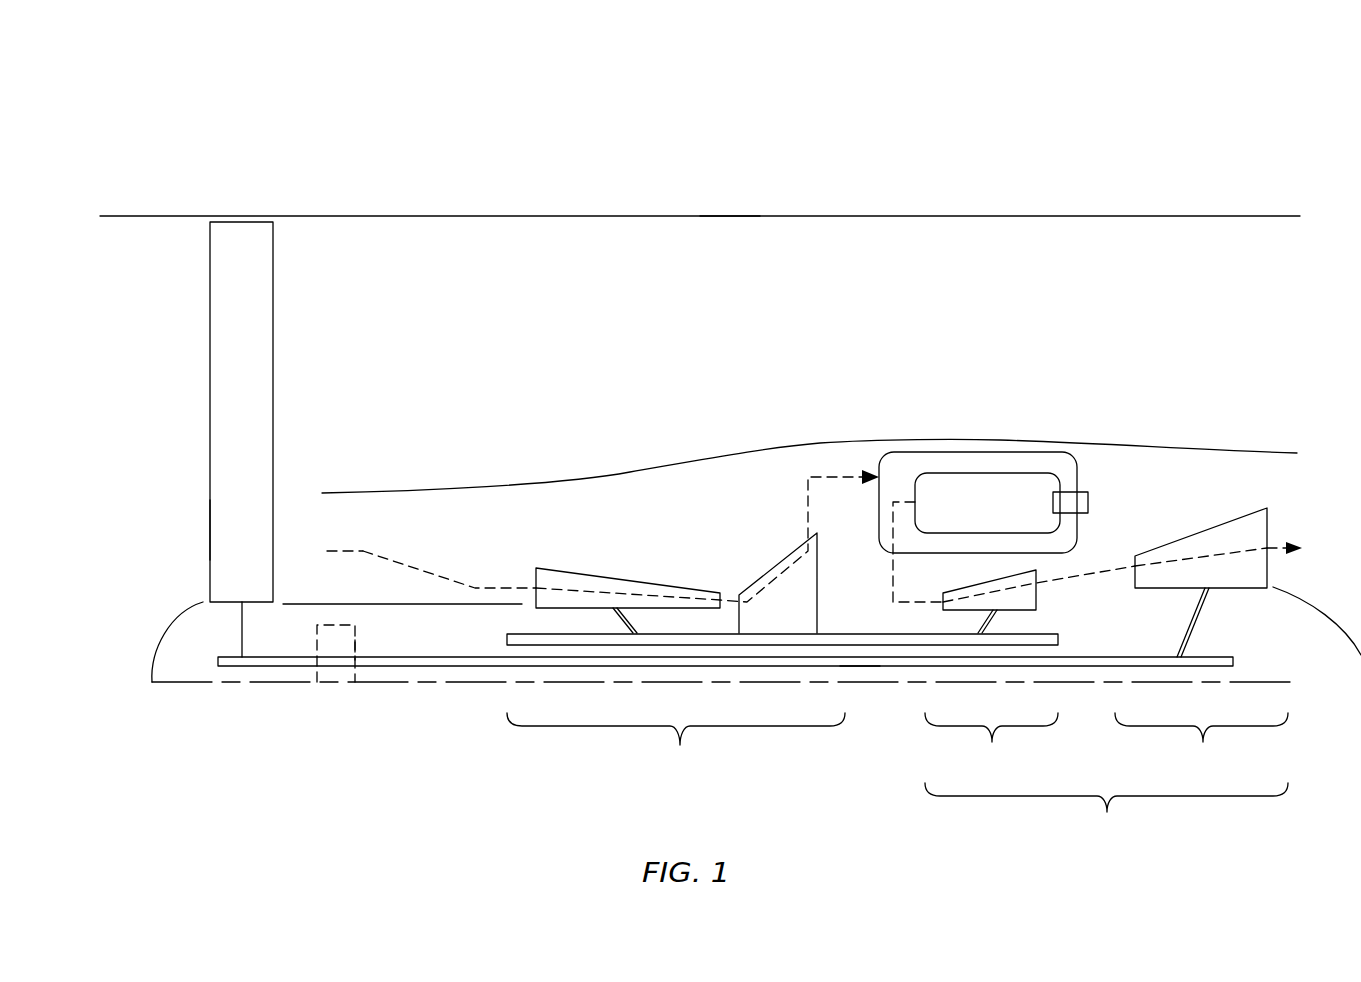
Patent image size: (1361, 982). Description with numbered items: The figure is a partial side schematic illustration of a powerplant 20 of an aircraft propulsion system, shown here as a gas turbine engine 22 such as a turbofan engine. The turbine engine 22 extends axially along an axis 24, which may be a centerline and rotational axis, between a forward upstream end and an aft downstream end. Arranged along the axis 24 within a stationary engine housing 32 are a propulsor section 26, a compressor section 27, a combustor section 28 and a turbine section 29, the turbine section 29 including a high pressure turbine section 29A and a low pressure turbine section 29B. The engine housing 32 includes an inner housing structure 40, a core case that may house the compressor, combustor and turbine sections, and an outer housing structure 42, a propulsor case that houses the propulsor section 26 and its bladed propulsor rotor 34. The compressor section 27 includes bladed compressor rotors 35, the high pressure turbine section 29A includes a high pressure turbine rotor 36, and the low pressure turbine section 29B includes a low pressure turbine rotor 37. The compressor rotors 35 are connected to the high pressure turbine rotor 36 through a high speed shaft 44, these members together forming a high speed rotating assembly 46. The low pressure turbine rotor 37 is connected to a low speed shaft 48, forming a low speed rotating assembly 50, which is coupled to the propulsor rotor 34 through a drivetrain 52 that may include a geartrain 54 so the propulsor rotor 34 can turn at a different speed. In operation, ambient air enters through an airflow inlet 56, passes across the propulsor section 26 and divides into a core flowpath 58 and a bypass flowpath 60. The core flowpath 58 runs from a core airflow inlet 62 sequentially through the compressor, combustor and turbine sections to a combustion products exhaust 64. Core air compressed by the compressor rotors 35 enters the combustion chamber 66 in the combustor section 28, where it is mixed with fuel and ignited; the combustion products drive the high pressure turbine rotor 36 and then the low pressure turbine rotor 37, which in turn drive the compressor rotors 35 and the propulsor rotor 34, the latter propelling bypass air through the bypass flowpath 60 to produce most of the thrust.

The powerplant 20 is at (74, 75).
The gas turbine engine 22 is at (127, 113).
The axis 24 is at (165, 690).
The propulsor section 26 is at (243, 207).
The compressor section 27 is at (676, 743).
The combustor section 28 is at (1032, 435).
The turbine section 29 is at (1106, 813).
The high pressure turbine section 29A is at (991, 743).
The low pressure turbine section 29B is at (1201, 743).
The engine housing 32 is at (703, 197).
The propulsor rotor 34 is at (210, 543).
The compressor rotors 35 is at (753, 578).
The high pressure turbine rotor 36 is at (1038, 598).
The low pressure turbine rotor 37 is at (1233, 588).
The inner housing structure 40 is at (630, 472).
The outer housing structure 42 is at (598, 216).
The high speed shaft 44 is at (847, 633).
The high speed rotating assembly 46 is at (513, 621).
The low speed shaft 48 is at (858, 667).
The low speed rotating assembly 50 is at (1242, 650).
The drivetrain 52 is at (335, 700).
The geartrain 54 is at (355, 640).
The airflow inlet 56 is at (100, 418).
The core flowpath 58 is at (422, 570).
The bypass flowpath 60 is at (489, 378).
The airflow inlet 62 is at (327, 551).
The combustion products exhaust 64 is at (1302, 548).
The combustion chamber 66 is at (1002, 515).